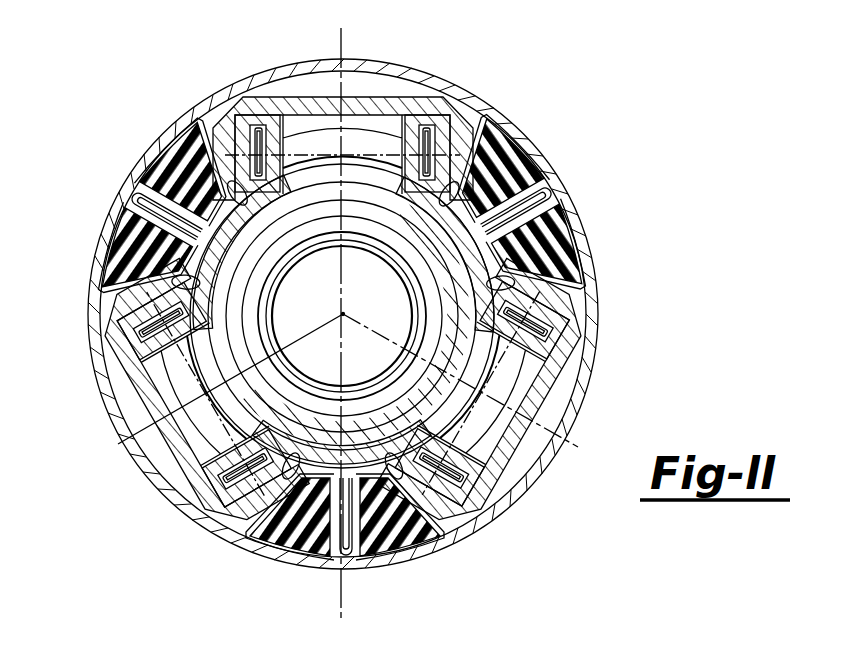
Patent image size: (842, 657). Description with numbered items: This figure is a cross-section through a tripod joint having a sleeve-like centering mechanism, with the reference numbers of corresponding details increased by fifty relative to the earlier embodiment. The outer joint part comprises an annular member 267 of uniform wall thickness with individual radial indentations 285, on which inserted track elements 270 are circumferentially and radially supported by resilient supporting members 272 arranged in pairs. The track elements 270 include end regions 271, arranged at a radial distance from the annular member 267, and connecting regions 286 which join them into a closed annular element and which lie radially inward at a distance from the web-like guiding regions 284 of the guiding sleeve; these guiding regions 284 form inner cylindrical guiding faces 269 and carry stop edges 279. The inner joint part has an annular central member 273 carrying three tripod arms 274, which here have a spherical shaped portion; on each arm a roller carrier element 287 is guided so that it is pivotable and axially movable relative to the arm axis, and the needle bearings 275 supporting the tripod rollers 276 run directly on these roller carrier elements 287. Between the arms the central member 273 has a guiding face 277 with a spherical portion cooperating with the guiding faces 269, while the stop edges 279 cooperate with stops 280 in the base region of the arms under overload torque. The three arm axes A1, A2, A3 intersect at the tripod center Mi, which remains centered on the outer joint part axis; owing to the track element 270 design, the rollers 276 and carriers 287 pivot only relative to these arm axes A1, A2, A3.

The annular member 267 is at (195, 118).
The inner cylindrical guiding face 269 is at (362, 535).
The track element 270 is at (450, 127).
The end region 271 is at (372, 107).
The resilient supporting member 272 is at (490, 167).
The central member 273 is at (212, 468).
The tripod arm 274 is at (560, 410).
The needle bearing 275 is at (468, 490).
The tripod roller 276 is at (438, 492).
The guiding face 277 is at (248, 510).
The stop edge 279 is at (145, 263).
The stop 280 is at (140, 322).
The guiding region 284 is at (283, 535).
The radial indentation 285 is at (560, 190).
The connecting region 286 is at (583, 222).
The roller carrier element 287 is at (470, 482).
The arm axis A1 is at (338, 50).
The arm axis A2 is at (578, 443).
The arm axis A3 is at (118, 440).
The center of the tripod Mi is at (343, 314).